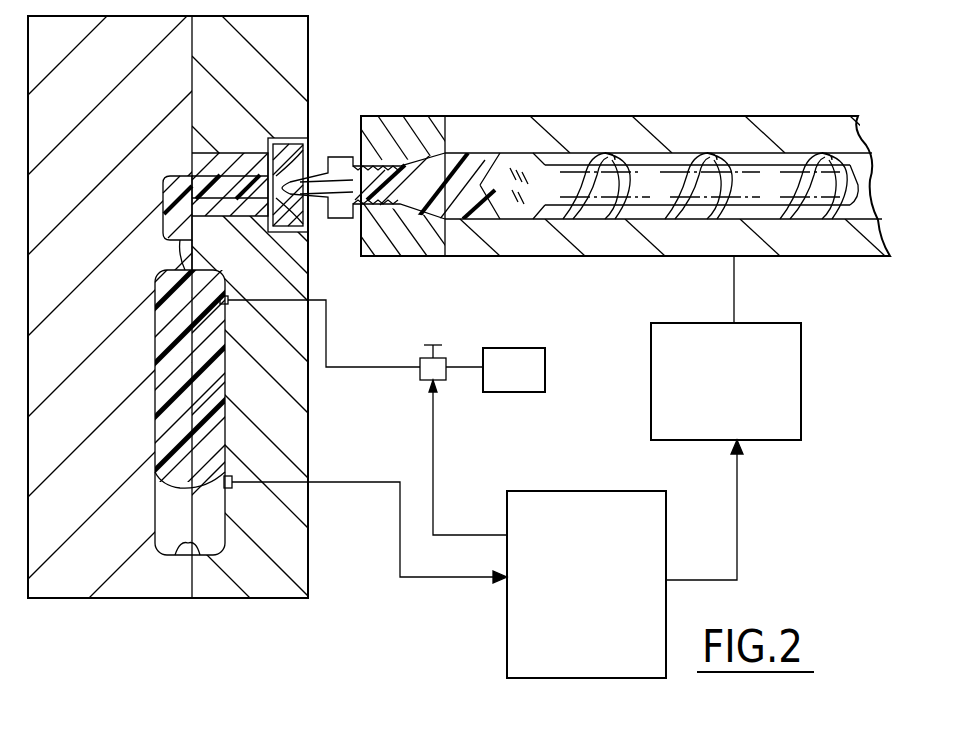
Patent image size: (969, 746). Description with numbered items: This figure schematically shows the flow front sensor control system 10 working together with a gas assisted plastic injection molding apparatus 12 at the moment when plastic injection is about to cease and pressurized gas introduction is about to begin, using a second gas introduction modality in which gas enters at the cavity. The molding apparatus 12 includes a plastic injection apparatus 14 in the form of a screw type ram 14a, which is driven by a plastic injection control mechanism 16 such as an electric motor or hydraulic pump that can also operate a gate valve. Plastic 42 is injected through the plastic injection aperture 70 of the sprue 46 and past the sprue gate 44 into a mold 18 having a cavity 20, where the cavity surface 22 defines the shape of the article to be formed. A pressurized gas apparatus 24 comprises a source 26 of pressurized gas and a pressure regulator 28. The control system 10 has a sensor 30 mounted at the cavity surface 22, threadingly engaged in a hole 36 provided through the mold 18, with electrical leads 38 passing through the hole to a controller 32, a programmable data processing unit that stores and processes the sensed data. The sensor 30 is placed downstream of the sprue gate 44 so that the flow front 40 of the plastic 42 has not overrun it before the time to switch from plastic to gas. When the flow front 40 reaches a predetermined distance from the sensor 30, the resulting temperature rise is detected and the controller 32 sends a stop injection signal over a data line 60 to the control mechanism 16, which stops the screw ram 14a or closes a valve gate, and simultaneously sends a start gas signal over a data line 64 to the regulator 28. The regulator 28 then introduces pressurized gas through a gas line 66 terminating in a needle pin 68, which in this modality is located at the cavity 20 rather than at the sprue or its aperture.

The flow front sensor control system 10 is at (248, 513).
The gas assisted plastic injection molding apparatus 12 is at (365, 283).
The plastic injection apparatus 14 is at (600, 116).
The screw type ram 14a is at (735, 165).
The plastic injection control mechanism 16 is at (802, 380).
The mold 18 is at (308, 416).
The cavity 20 is at (166, 396).
The cavity surface 22 is at (185, 556).
The pressurized gas apparatus 24 is at (468, 397).
The source of pressurized gas 26 is at (545, 368).
The pressure regulator 28 is at (420, 360).
The sensor 30 is at (212, 492).
The controller 32 is at (668, 614).
The hole 36 is at (290, 485).
The electrical leads 38 is at (400, 482).
The flow front 40 is at (160, 492).
The plastic 42 is at (155, 358).
The sprue gate 44 is at (182, 263).
The sprue 46 is at (163, 200).
The data line 60 is at (738, 516).
The data line 64 is at (436, 470).
The gas line 66 is at (258, 300).
The needle pin 68 is at (228, 304).
The plastic injection aperture 70 is at (296, 148).